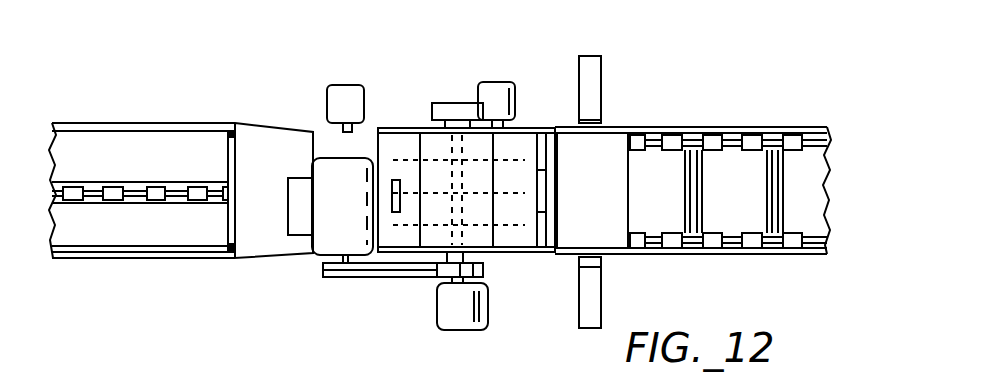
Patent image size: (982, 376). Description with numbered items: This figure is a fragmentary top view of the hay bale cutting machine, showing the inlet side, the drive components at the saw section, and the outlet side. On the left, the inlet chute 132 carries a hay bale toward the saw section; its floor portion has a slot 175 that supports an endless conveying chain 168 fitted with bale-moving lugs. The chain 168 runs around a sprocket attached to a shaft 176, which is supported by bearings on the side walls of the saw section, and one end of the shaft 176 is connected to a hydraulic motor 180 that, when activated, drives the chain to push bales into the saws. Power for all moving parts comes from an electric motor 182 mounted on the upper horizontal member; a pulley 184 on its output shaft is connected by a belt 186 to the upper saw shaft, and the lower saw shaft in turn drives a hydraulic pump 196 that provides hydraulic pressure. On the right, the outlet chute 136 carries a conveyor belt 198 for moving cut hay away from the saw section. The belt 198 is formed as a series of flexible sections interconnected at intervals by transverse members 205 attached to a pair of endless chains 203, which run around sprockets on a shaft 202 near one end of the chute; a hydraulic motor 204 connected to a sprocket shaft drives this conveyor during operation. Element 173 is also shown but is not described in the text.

The inlet chute 132 is at (157, 263).
The endless conveying chain 168 is at (157, 188).
The slot 175 is at (180, 186).
The shaft 176 is at (338, 131).
The hydraulic motor 180 is at (342, 92).
The electric motor 182 is at (358, 226).
The pulley 184 is at (338, 278).
The belt 186 is at (410, 278).
The hydraulic pump 196 is at (470, 318).
The shaft 202 is at (515, 120).
The hydraulic motor 204 is at (500, 92).
The vertical post 173 is at (590, 78).
The conveyor belt 198 is at (666, 182).
The outlet chute 136 is at (752, 124).
The transverse members 205 is at (778, 196).
The endless chains 203 is at (712, 249).